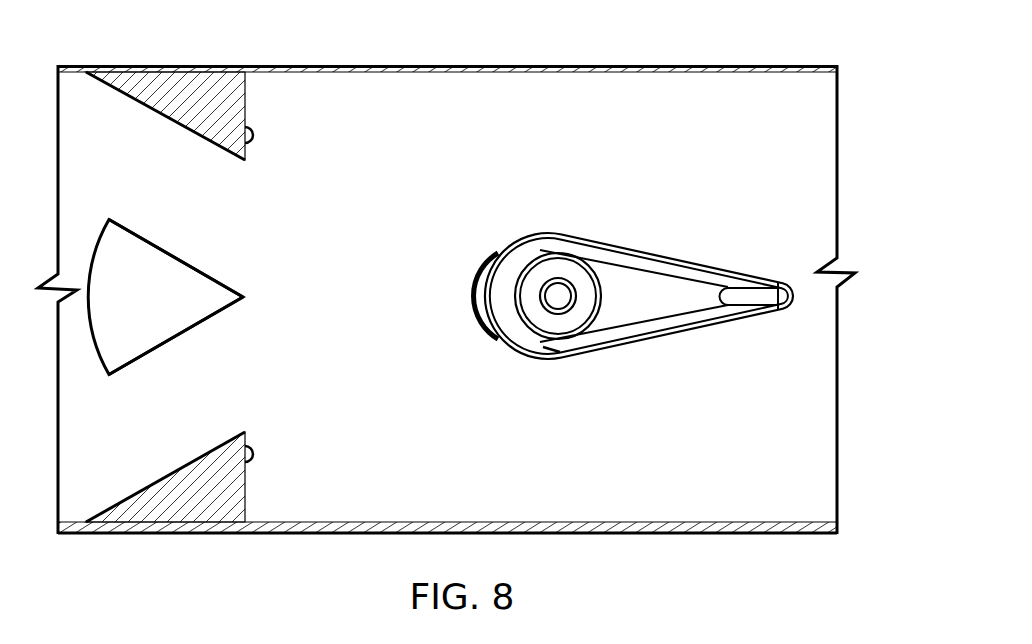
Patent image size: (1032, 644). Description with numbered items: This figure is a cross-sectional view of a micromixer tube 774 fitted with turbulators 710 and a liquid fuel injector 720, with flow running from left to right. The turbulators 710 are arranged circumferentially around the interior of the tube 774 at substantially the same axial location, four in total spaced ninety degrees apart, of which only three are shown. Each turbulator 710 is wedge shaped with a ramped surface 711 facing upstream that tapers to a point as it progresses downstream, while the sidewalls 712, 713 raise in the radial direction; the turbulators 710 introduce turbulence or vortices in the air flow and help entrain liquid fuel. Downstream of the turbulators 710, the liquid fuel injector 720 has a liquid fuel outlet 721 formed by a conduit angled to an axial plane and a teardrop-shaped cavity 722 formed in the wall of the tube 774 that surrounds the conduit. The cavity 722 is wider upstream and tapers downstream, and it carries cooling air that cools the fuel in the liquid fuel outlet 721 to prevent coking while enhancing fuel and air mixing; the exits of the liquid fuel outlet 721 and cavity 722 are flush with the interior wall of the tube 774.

The turbulators 710 is at (205, 264).
The ramped surface 711 is at (158, 478).
The sidewall 712 is at (220, 317).
The sidewall 713 is at (197, 262).
The liquid fuel injector 720 is at (693, 315).
The liquid fuel outlet 721 is at (557, 278).
The cavity 722 is at (795, 300).
The micromixer tube 774 is at (822, 160).